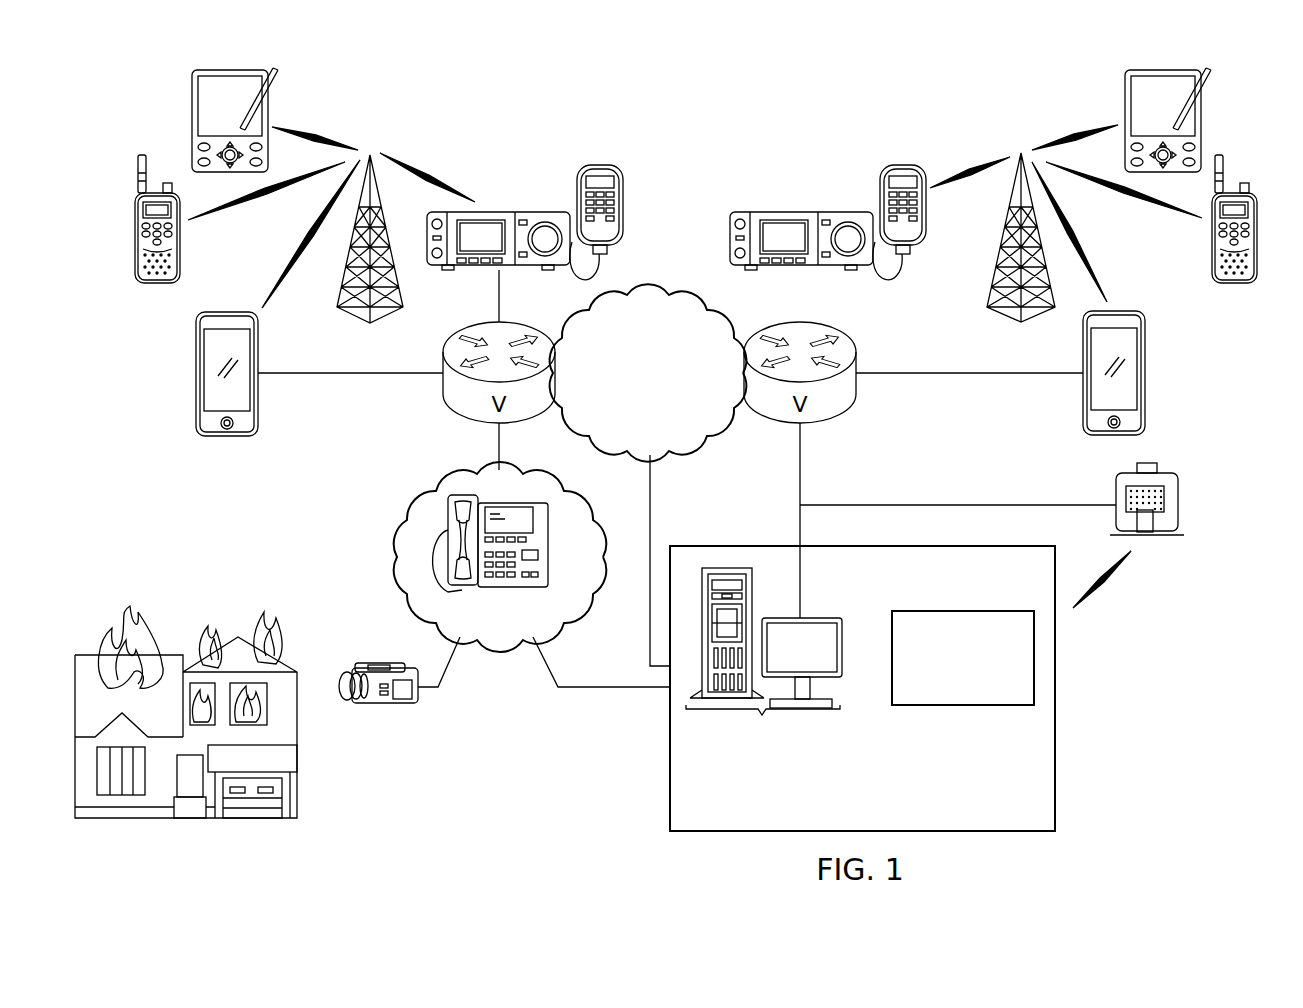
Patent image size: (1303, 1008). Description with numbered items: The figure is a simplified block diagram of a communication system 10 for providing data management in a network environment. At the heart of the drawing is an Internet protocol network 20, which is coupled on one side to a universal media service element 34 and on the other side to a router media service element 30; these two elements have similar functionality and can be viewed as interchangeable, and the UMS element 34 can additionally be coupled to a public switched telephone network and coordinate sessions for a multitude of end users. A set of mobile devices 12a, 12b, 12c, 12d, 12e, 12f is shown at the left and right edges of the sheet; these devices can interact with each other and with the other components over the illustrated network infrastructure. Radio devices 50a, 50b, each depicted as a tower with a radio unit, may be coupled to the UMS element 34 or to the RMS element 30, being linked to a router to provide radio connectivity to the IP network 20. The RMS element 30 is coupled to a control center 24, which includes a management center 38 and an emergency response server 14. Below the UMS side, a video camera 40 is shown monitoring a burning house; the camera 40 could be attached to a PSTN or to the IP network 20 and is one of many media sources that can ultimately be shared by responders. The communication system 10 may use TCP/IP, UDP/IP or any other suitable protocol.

The communication system 10 is at (664, 465).
The mobile device 12a is at (196, 365).
The mobile device 12b is at (192, 113).
The mobile device 12c is at (135, 245).
The mobile device 12d is at (1201, 122).
The mobile device 12e is at (1212, 240).
The mobile device 12f is at (1145, 358).
The emergency response server 14 is at (965, 705).
The Internet protocol (IP) network 20 is at (636, 416).
The control center 24 is at (895, 688).
The router media service (RMS) element 30 is at (856, 390).
The universal media service (UMS) element 34 is at (443, 390).
The management center 38 is at (822, 618).
The video camera 40 is at (373, 703).
The radio device 50a is at (466, 155).
The radio device 50b is at (797, 161).